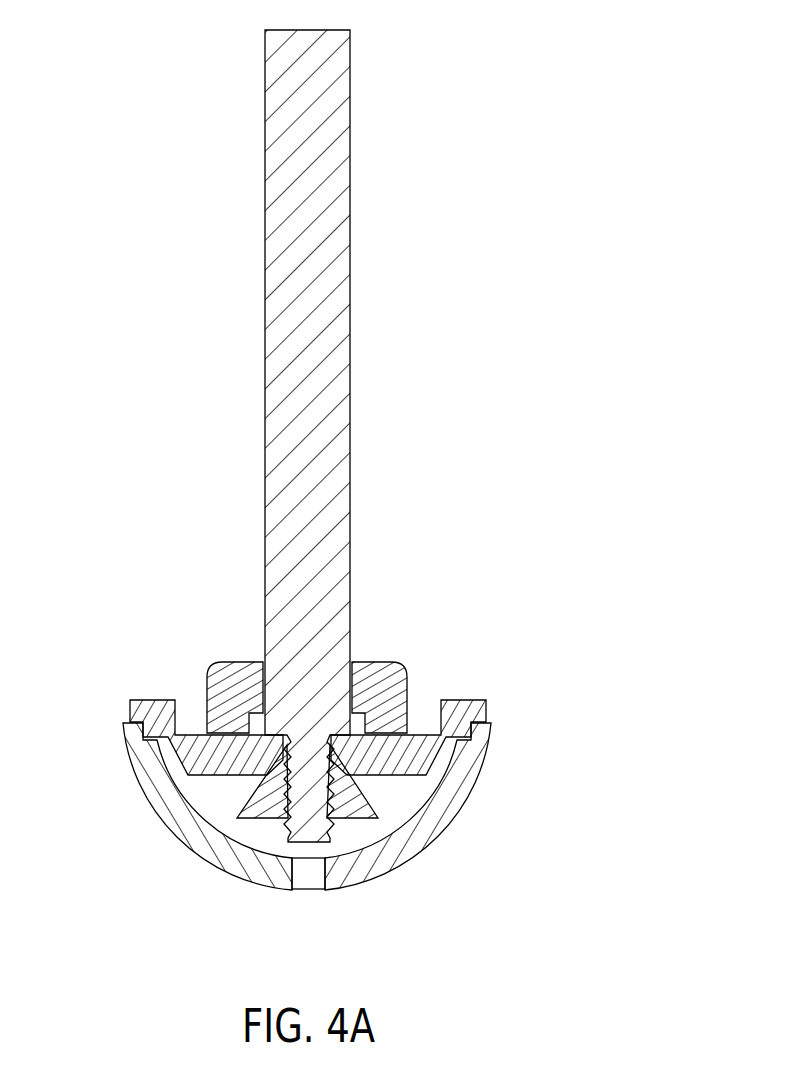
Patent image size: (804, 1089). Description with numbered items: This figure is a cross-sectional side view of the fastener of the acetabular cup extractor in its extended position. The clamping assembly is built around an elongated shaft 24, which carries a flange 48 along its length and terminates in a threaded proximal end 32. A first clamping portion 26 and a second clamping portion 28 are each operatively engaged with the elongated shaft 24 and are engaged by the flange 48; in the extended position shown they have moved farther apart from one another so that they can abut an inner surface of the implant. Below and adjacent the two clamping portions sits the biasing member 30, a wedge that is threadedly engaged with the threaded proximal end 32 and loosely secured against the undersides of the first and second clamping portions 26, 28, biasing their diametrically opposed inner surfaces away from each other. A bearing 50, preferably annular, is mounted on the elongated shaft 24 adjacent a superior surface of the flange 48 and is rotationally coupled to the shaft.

The elongated shaft 24 is at (350, 90).
The bearing 50 is at (232, 683).
The flange 48 is at (359, 722).
The first clamping portion 26 is at (128, 752).
The second clamping portion 28 is at (492, 754).
The biasing member 30 is at (343, 806).
The threaded proximal end 32 is at (308, 808).